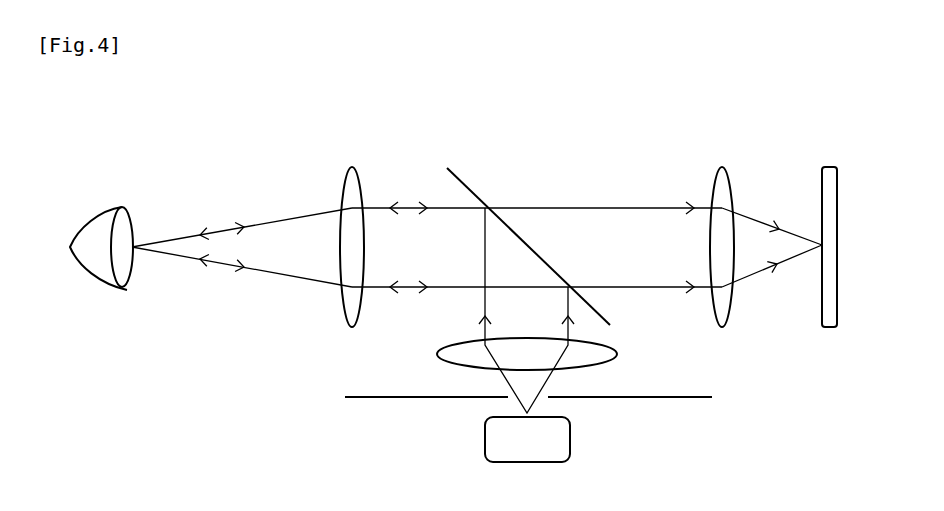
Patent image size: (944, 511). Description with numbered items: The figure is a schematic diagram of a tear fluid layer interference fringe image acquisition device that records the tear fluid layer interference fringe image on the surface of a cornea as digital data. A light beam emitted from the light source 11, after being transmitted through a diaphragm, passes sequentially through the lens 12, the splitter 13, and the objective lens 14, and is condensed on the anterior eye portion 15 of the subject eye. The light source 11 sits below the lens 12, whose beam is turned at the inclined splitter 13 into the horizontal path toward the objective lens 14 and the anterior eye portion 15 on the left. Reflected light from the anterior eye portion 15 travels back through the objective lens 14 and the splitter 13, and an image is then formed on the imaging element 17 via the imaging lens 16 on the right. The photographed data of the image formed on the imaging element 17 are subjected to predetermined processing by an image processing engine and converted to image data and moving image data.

The light source 11 is at (499, 463).
The lens 12 is at (437, 353).
The splitter 13 is at (464, 183).
The objective lens 14 is at (356, 168).
The anterior eye portion 15 is at (125, 218).
The imaging lens 16 is at (725, 170).
The imaging element 17 is at (829, 167).